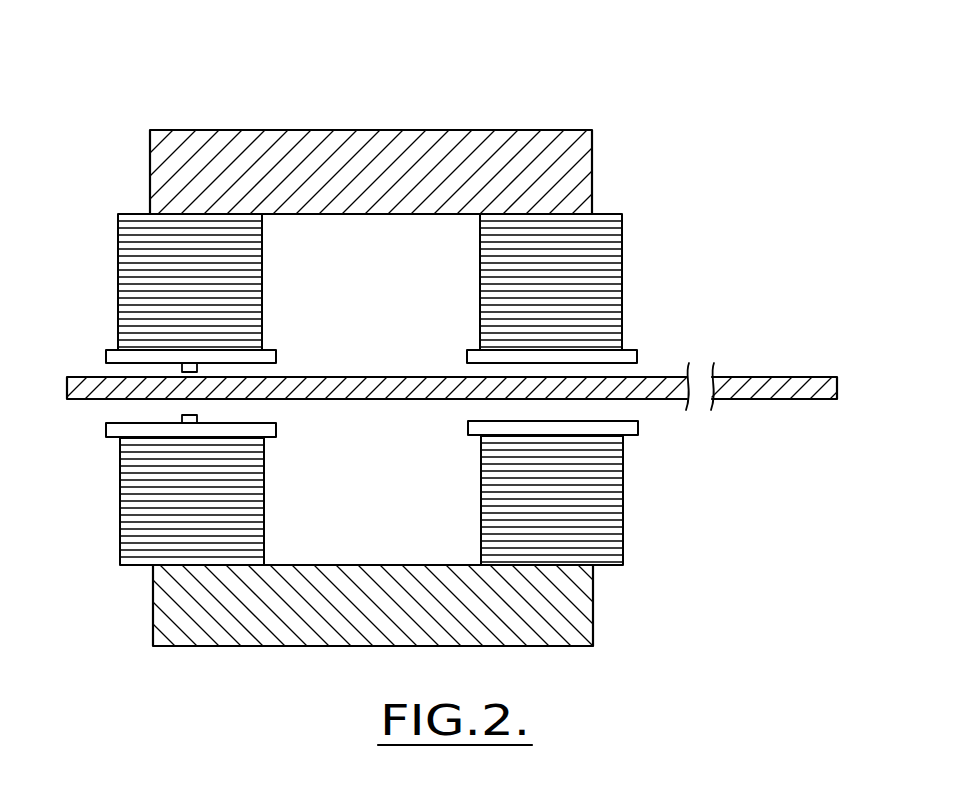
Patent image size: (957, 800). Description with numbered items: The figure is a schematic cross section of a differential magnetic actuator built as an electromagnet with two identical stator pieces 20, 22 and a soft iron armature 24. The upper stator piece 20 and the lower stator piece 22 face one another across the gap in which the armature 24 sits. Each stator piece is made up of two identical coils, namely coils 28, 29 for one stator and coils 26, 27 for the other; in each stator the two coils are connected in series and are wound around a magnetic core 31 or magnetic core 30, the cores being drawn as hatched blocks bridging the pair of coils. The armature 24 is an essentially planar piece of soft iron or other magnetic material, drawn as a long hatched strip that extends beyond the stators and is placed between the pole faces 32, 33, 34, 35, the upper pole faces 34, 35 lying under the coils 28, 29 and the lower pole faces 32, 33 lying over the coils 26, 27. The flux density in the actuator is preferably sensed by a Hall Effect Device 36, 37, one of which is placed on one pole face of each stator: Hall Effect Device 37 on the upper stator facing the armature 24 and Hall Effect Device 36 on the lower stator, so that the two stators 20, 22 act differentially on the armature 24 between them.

The stator piece 20 is at (580, 106).
The stator piece 22 is at (592, 678).
The armature 24 is at (67, 391).
The coil 26 is at (120, 520).
The coil 27 is at (624, 498).
The coil 28 is at (118, 272).
The coil 29 is at (622, 250).
The magnetic core 30 is at (190, 648).
The magnetic core 31 is at (349, 130).
The pole face 32 is at (106, 428).
The pole face 33 is at (638, 427).
The pole face 34 is at (277, 355).
The pole face 35 is at (637, 355).
The Hall Effect Device 36 is at (197, 418).
The Hall Effect Device 37 is at (182, 371).